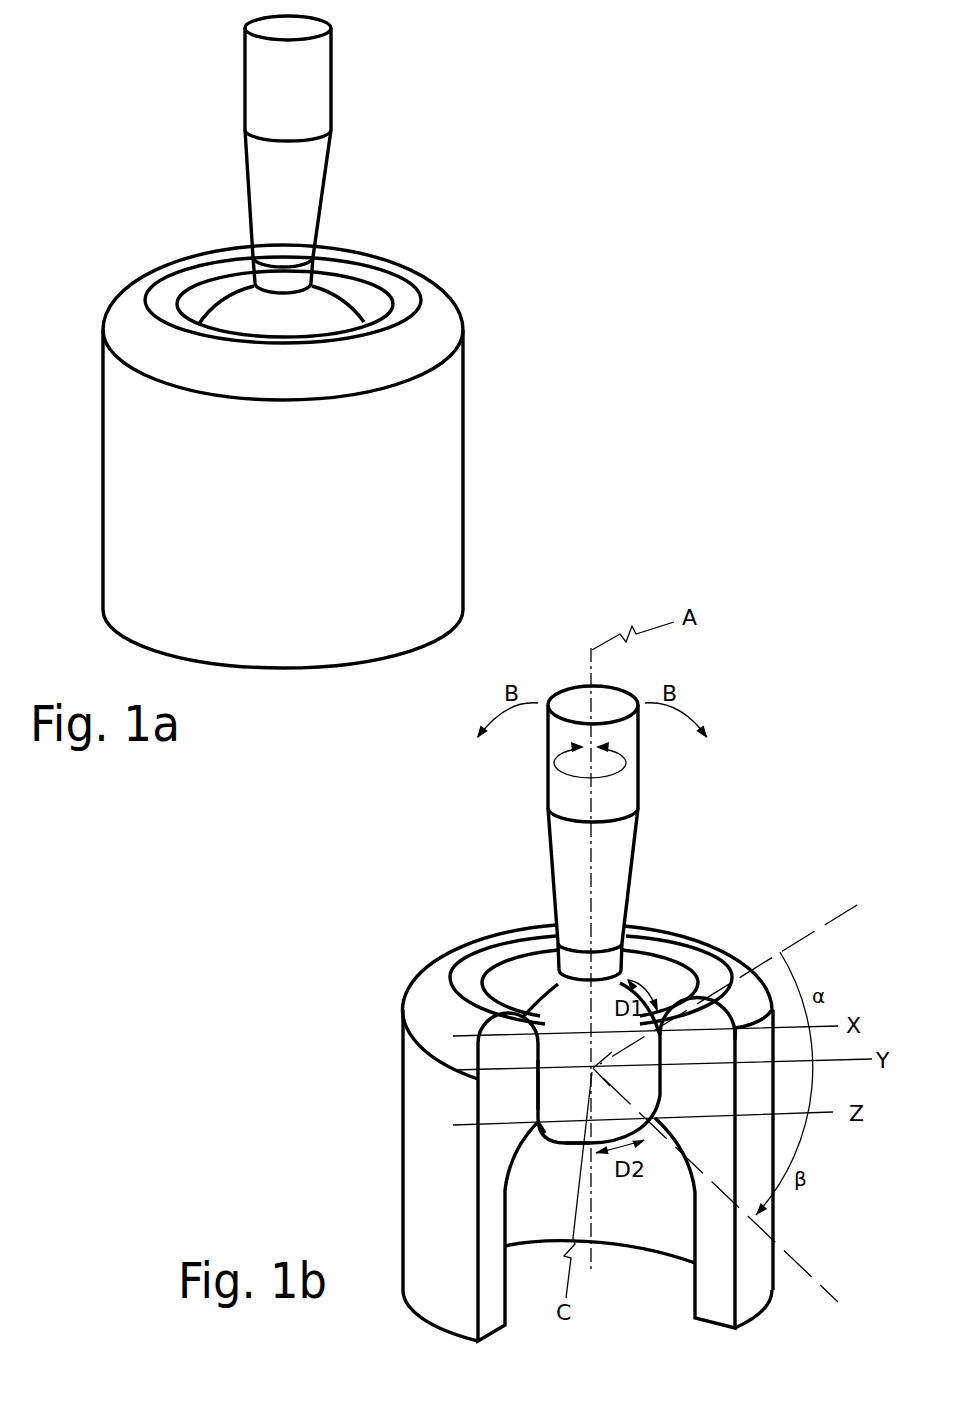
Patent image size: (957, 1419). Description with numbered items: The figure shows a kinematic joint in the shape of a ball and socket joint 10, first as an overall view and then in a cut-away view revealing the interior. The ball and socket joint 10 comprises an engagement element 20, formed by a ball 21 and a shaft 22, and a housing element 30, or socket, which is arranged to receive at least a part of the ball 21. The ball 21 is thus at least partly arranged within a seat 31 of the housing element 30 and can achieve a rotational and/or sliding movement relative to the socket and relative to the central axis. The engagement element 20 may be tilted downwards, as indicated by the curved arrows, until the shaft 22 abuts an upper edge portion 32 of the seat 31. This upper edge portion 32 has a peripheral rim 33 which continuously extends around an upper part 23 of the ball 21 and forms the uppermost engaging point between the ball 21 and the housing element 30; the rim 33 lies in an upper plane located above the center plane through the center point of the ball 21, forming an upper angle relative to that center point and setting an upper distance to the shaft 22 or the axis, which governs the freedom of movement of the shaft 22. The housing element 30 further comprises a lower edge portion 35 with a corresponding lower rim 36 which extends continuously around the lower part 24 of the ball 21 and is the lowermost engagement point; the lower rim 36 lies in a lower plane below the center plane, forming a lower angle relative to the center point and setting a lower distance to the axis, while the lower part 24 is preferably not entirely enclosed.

In FIG. 1A, the ball and socket joint 10 is at (445, 138).
In FIG. 1A, the engagement element 20 is at (331, 85).
In FIG. 1B, the engagement element 20 is at (638, 827).
In FIG. 1B, the ball 21 is at (645, 985).
In FIG. 1B, the shaft 22 is at (632, 877).
In FIG. 1B, the upper part of the ball 23 is at (752, 968).
In FIG. 1B, the lower part of the ball 24 is at (578, 1142).
In FIG. 1A, the housing element 30 is at (466, 462).
In FIG. 1B, the housing element 30 is at (402, 1027).
In FIG. 1B, the seat 31 is at (536, 1089).
In FIG. 1B, the upper edge portion 32 is at (530, 1022).
In FIG. 1B, the peripheral rim 33 is at (467, 975).
In FIG. 1B, the lower edge portion 35 is at (540, 1131).
In FIG. 1B, the lower rim 36 is at (538, 1120).